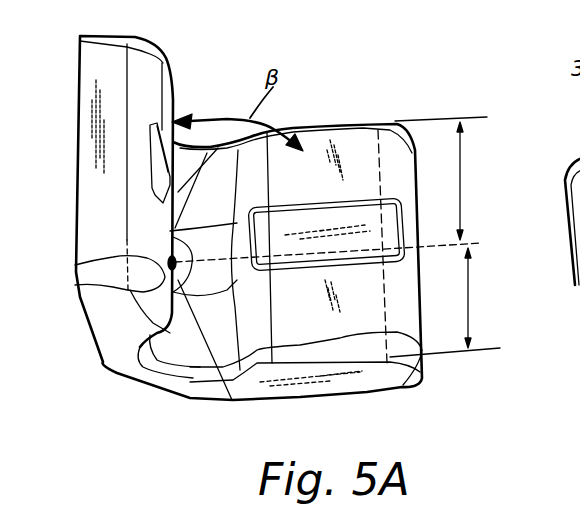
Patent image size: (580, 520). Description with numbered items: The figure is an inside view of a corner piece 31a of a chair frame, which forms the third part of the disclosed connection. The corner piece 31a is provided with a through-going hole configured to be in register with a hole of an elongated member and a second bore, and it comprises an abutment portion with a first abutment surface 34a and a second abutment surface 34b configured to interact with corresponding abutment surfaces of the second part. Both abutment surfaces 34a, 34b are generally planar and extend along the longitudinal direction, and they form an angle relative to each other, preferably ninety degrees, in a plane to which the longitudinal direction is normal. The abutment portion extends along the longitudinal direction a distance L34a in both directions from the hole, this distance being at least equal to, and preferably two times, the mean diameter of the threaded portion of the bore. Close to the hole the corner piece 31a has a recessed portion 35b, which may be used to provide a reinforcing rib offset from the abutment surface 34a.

The corner piece 31a is at (307, 127).
The first abutment surface 34a is at (352, 160).
The second abutment surface 34b is at (172, 110).
The recessed portion 35b is at (152, 146).
The distance L34a is at (352, 237).